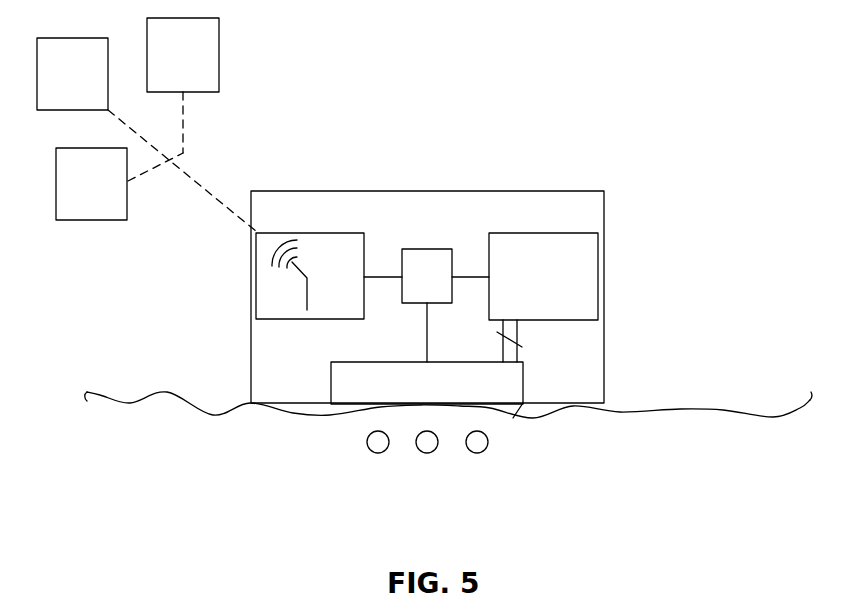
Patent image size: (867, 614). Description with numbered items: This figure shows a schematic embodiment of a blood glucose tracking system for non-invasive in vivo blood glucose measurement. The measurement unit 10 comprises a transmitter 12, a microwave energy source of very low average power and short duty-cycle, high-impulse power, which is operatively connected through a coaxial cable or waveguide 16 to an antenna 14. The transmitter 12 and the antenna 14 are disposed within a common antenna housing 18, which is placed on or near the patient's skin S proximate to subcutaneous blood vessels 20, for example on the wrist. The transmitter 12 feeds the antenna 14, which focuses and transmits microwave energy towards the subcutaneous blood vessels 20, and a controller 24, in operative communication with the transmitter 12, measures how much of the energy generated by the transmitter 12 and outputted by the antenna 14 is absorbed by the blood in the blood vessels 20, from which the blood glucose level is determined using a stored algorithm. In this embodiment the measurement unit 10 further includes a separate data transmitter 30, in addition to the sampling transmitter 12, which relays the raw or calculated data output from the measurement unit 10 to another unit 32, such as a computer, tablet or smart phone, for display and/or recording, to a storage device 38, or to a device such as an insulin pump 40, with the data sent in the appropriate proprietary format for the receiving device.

The measurement unit 10 is at (606, 144).
The transmitter 12 is at (529, 290).
The antenna 14 is at (413, 396).
The coaxial cable or waveguide 16 is at (540, 335).
The antenna housing 18 is at (598, 222).
The subcutaneous blood vessels 20 is at (378, 453).
The controller 24 is at (413, 292).
The data transmitter 30 is at (268, 300).
The separate display unit 32 is at (169, 71).
The storage device 38 is at (58, 87).
The insulin pump 40 is at (77, 199).
The skin S is at (723, 401).